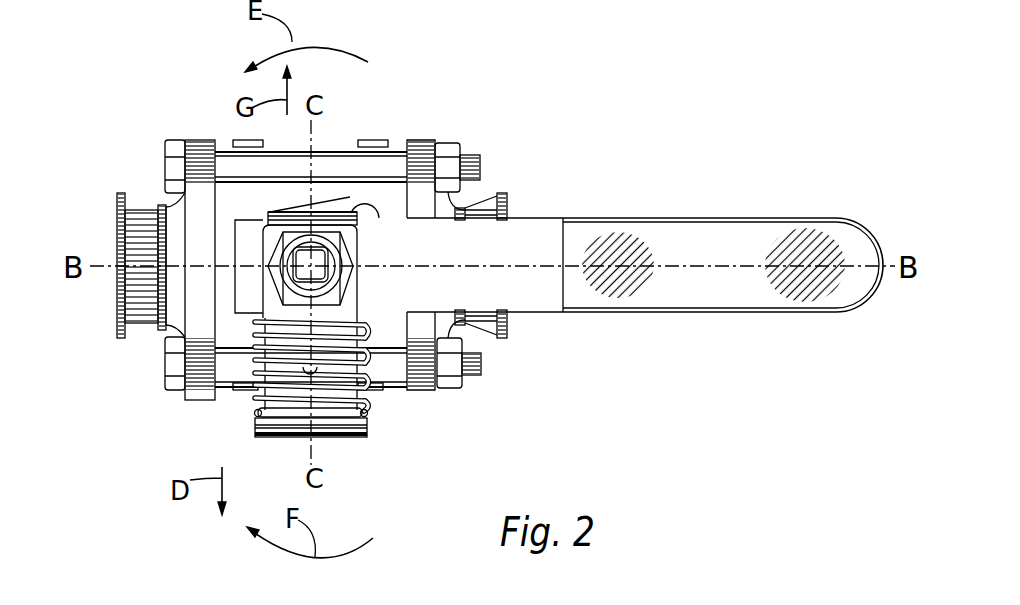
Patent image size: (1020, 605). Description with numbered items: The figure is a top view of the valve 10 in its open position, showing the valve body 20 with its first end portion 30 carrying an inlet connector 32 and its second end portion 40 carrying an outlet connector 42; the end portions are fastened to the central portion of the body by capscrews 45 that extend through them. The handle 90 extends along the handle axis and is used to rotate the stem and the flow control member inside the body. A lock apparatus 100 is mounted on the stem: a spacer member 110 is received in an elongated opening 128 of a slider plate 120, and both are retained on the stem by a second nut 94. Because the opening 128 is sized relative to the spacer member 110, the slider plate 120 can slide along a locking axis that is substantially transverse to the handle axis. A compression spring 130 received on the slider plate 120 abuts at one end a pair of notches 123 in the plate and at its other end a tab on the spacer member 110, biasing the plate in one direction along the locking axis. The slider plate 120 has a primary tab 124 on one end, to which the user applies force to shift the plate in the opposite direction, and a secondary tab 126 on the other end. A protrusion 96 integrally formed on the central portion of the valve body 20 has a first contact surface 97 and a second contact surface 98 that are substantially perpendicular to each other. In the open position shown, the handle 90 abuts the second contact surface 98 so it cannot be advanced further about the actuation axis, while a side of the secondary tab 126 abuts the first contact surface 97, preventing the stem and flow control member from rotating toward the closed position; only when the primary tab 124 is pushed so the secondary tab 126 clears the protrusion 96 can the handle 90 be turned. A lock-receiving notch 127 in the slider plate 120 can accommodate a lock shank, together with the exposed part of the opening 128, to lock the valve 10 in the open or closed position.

The valve 10 is at (322, 252).
The valve body 20 is at (270, 235).
The end portion 30 is at (186, 140).
The inlet connector 32 is at (118, 345).
The end portion 40 is at (432, 128).
The outlet connector 42 is at (508, 333).
The capscrews 45 is at (483, 165).
The handle 90 is at (653, 218).
The second nut 94 is at (367, 280).
The protrusion 96 is at (378, 198).
The first contact surface 97 is at (350, 197).
The second contact surface 98 is at (375, 222).
The lock apparatus 100 is at (296, 420).
The spacer member 110 is at (410, 390).
The slider plate 120 is at (350, 440).
The notches 123 is at (257, 413).
The primary tab 124 is at (264, 446).
The secondary tab 126 is at (268, 208).
The lock-receiving notch 127 is at (305, 371).
The elongated opening 128 is at (278, 302).
The compression spring 130 is at (363, 413).